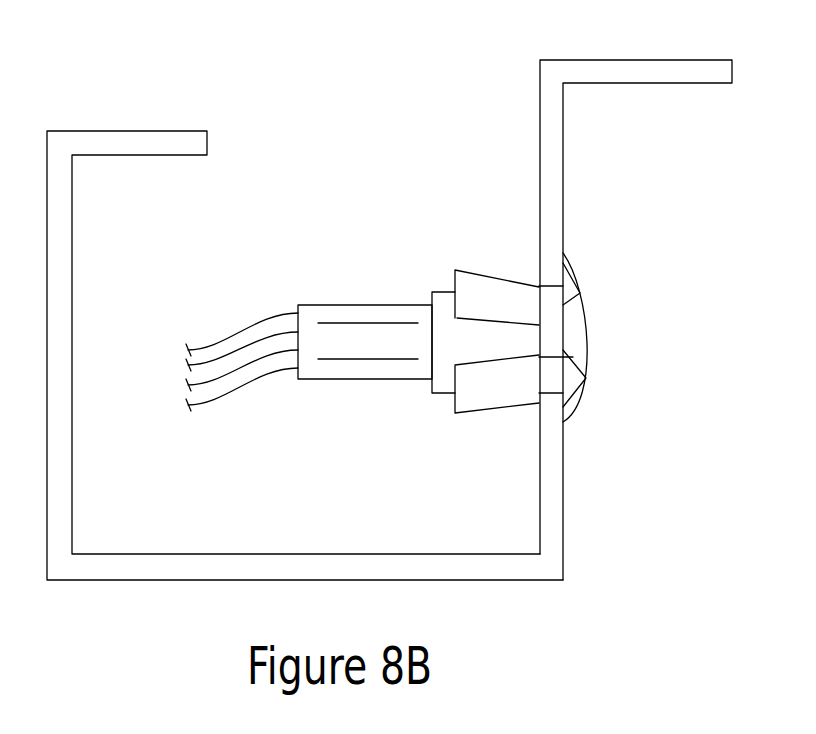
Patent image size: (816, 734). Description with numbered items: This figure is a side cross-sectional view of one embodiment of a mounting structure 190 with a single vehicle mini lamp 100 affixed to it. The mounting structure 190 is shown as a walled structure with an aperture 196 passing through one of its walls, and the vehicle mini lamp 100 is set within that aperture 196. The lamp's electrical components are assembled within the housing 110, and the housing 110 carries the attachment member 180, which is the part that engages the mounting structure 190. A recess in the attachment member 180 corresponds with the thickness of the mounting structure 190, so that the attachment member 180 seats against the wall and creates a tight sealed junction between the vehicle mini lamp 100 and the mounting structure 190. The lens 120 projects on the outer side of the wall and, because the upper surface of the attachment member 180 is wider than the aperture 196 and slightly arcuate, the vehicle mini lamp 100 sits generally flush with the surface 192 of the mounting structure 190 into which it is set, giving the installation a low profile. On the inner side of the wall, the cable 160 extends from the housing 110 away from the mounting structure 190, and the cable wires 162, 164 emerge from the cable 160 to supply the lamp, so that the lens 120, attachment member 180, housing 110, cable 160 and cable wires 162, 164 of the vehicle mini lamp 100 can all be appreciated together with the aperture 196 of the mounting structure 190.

The vehicle mini lamp 100 is at (314, 224).
The housing 110 is at (447, 392).
The lens 120 is at (581, 325).
The cable 160 is at (343, 372).
The cable wire 162 is at (233, 343).
The cable wire 164 is at (233, 388).
The attachment member 180 is at (480, 284).
The mounting structure 190 is at (177, 143).
The surface 192 is at (563, 138).
The aperture 196 is at (590, 377).